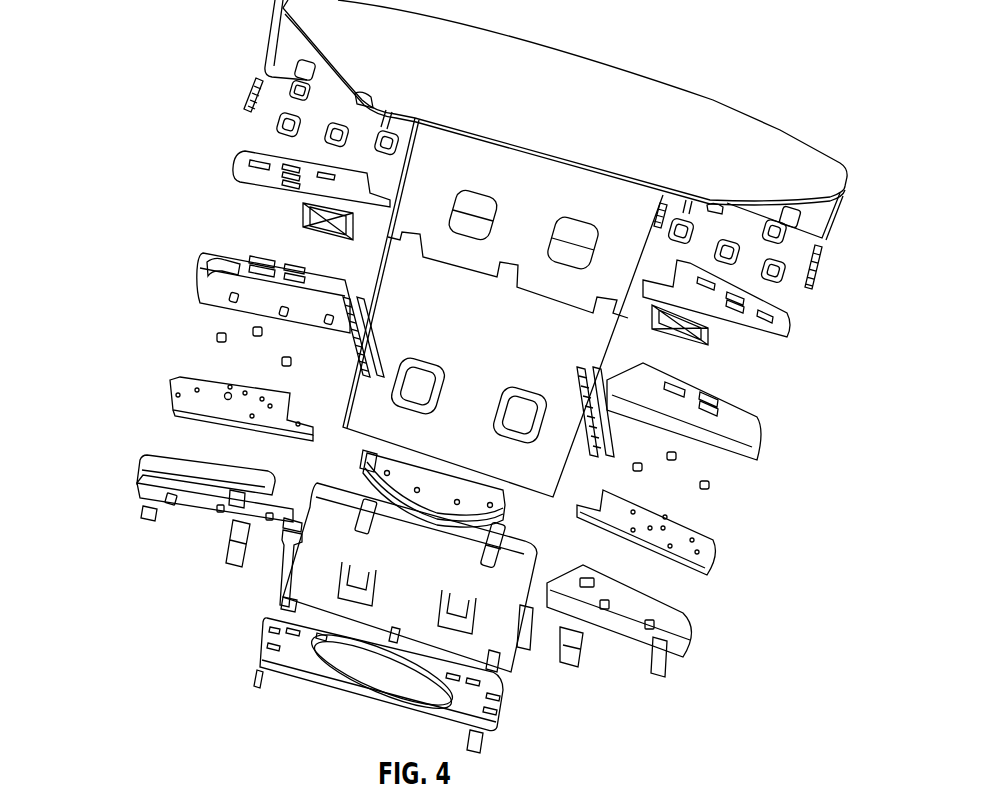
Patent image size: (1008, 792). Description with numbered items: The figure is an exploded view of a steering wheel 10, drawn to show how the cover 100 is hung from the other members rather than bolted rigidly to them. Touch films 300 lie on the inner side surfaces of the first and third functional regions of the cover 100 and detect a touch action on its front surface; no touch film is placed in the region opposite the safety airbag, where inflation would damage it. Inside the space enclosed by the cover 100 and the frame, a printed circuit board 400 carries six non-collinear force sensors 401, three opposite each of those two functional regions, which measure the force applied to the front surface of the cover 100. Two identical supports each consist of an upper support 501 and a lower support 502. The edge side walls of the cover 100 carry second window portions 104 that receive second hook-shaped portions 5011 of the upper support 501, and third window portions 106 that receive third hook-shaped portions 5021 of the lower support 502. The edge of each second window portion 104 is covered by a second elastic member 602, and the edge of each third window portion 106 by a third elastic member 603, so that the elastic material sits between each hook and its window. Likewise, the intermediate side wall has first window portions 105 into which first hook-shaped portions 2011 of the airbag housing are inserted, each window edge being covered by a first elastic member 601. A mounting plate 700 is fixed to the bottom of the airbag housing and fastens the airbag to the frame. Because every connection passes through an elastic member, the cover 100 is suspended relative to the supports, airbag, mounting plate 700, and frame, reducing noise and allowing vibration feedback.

The steering wheel 10 is at (592, 93).
The cover 100 is at (757, 150).
The second window portion 104 is at (270, 44).
The first window portion 105 is at (403, 383).
The third window portion 106 is at (305, 68).
The touch film 300 is at (252, 168).
The printed circuit board 400 is at (187, 393).
The force sensor 401 is at (230, 393).
The upper support 501 is at (205, 280).
The second hook-shaped portion 5011 is at (203, 265).
The lower support 502 is at (147, 495).
The third hook-shaped portion 5021 is at (172, 502).
The first elastic member 601 is at (348, 352).
The second elastic member 602 is at (253, 89).
The third elastic member 603 is at (277, 125).
The first hook-shaped portion 2011 is at (353, 587).
The mounting plate 700 is at (453, 705).